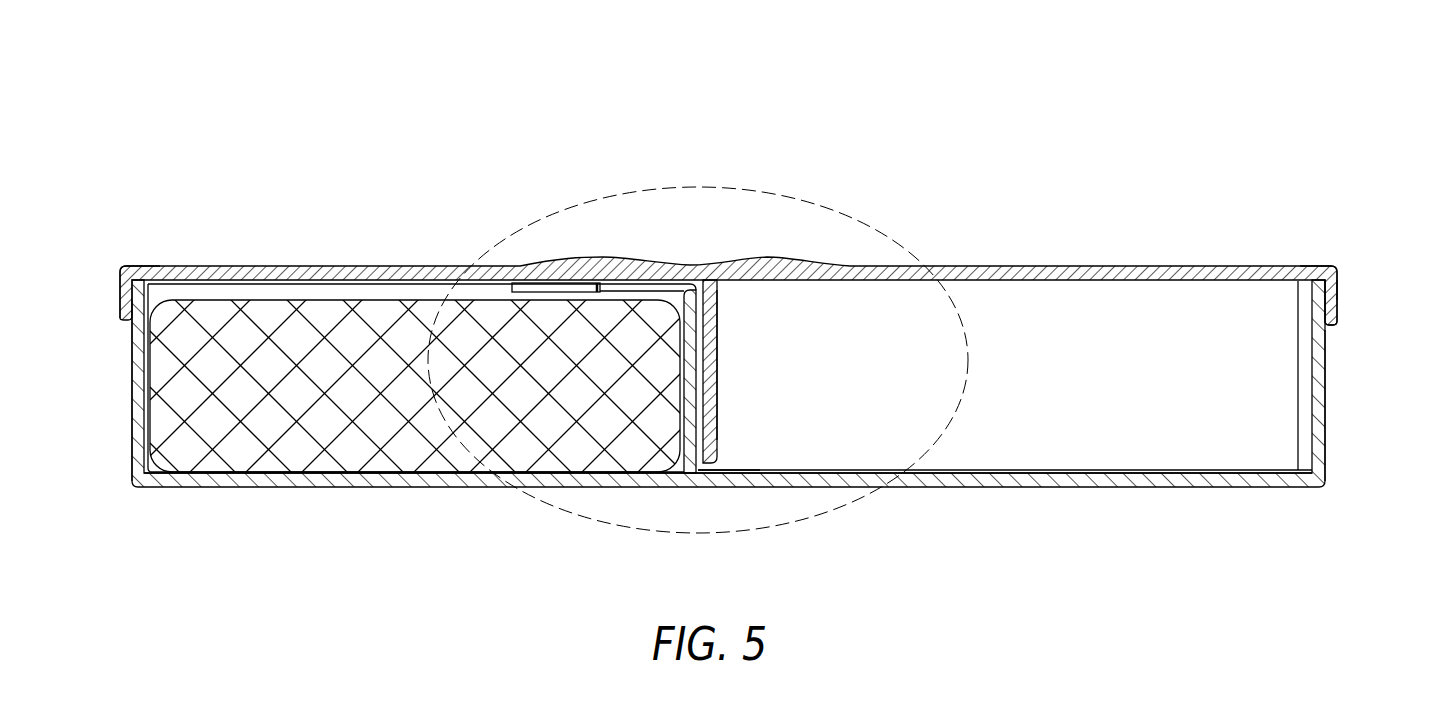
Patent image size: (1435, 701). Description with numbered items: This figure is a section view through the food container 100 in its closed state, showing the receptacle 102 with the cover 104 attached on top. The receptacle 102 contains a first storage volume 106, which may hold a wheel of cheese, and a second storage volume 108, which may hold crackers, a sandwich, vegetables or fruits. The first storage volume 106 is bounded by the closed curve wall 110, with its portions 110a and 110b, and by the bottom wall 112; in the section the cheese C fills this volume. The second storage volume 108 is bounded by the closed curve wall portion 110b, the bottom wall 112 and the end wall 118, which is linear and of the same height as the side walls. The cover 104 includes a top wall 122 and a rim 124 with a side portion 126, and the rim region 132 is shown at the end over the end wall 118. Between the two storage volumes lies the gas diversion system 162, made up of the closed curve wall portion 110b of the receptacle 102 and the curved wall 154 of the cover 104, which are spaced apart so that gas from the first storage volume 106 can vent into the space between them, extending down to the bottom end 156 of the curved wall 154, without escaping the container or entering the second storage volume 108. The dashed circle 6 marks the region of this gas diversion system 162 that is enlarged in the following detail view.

The food container 100 is at (1212, 140).
The receptacle 102 is at (1216, 492).
The cover 104 is at (1152, 252).
The first storage volume 106 is at (179, 288).
The second storage volume 108 is at (1143, 392).
The closed curve wall 110 is at (120, 386).
The closed curve wall portion 110a is at (132, 425).
The closed curve wall portion 110b is at (690, 382).
The bottom wall 112 is at (1080, 488).
The end wall 118 is at (1327, 415).
The top wall 122 is at (229, 268).
The rim 124 is at (1346, 312).
The side portion 126 is at (119, 300).
The lid edge 132 is at (1342, 295).
The curved wall 154 is at (719, 318).
The bottom end 156 is at (719, 468).
The gas diversion system 162 is at (770, 413).
The contents C is at (290, 450).
The detail view indicator FIG. 6 is at (487, 250).